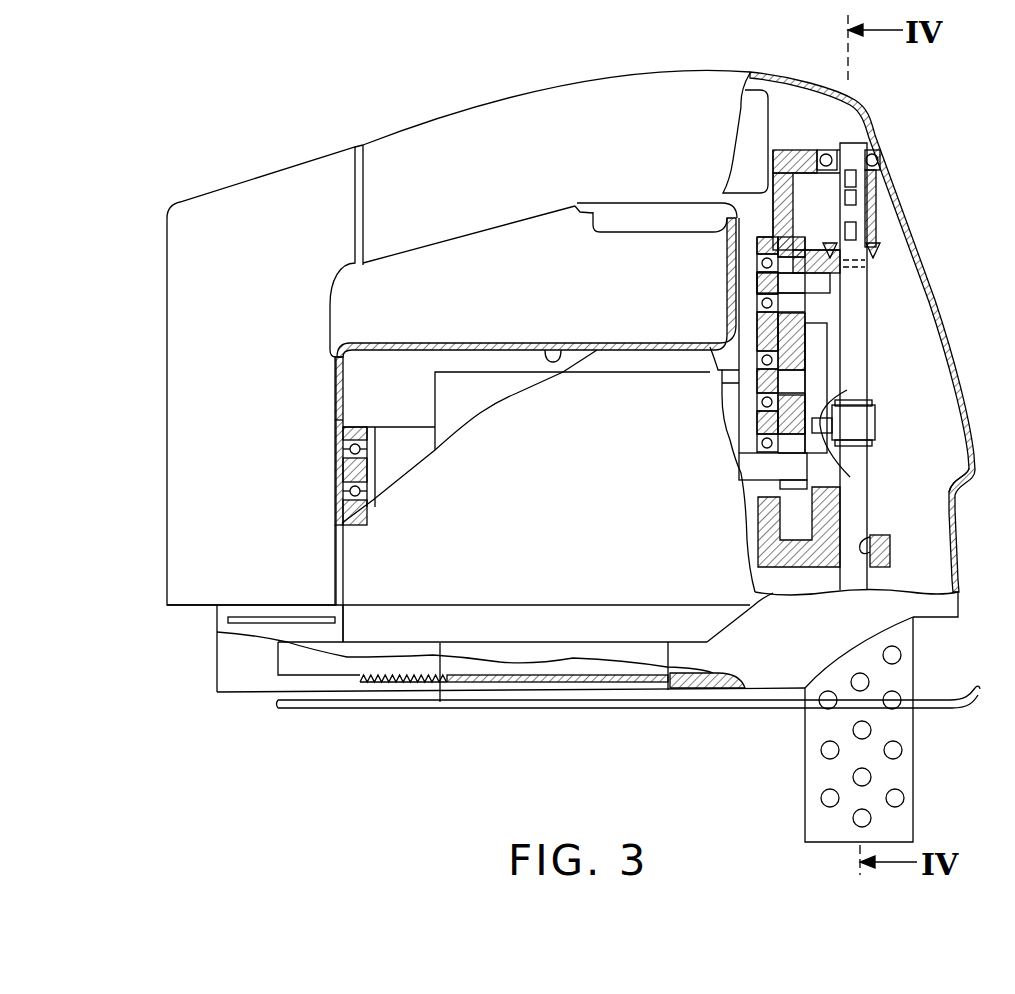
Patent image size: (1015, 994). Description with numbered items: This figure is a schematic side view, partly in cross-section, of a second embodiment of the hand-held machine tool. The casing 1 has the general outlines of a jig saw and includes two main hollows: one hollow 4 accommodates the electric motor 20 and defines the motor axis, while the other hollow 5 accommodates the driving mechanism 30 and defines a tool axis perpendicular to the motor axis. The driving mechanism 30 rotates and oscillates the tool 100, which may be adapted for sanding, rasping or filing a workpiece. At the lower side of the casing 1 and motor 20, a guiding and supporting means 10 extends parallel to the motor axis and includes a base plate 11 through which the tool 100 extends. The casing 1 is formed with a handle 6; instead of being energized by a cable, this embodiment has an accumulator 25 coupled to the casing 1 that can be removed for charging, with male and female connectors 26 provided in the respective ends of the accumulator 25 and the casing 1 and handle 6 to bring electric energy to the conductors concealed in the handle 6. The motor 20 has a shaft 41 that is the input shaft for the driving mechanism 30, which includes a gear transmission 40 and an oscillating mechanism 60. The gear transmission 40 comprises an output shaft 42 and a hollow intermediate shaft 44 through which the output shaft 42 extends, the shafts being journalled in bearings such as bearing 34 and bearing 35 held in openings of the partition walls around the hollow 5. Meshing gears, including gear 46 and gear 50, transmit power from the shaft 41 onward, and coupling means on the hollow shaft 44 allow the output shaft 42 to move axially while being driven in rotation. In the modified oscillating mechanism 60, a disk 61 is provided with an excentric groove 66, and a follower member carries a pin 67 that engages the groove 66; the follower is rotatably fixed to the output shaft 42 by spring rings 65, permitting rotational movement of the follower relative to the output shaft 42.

The casing 1 is at (433, 338).
The main hollow 4 is at (560, 345).
The main hollow 5 is at (960, 474).
The handle 6 is at (512, 112).
The guiding and supporting means 10 is at (414, 740).
The base plate 11 is at (707, 703).
The electric motor 20 is at (503, 380).
The accumulator 25 is at (244, 501).
The connectors 26 is at (358, 202).
The driving mechanism 30 is at (930, 205).
The bearing 34 is at (867, 143).
The bearing 35 is at (875, 535).
The gear transmission 40 is at (803, 240).
The shaft 41 is at (745, 473).
The output shaft 42 is at (850, 313).
The intermediate shaft 44 is at (870, 203).
The gear 46 is at (780, 488).
The gear 50 is at (787, 340).
The oscillating mechanism 60 is at (890, 419).
The disk 61 is at (817, 347).
The spring rings 65 is at (857, 402).
The excentric groove 66 is at (850, 477).
The pin 67 is at (847, 390).
The tool 100 is at (920, 778).